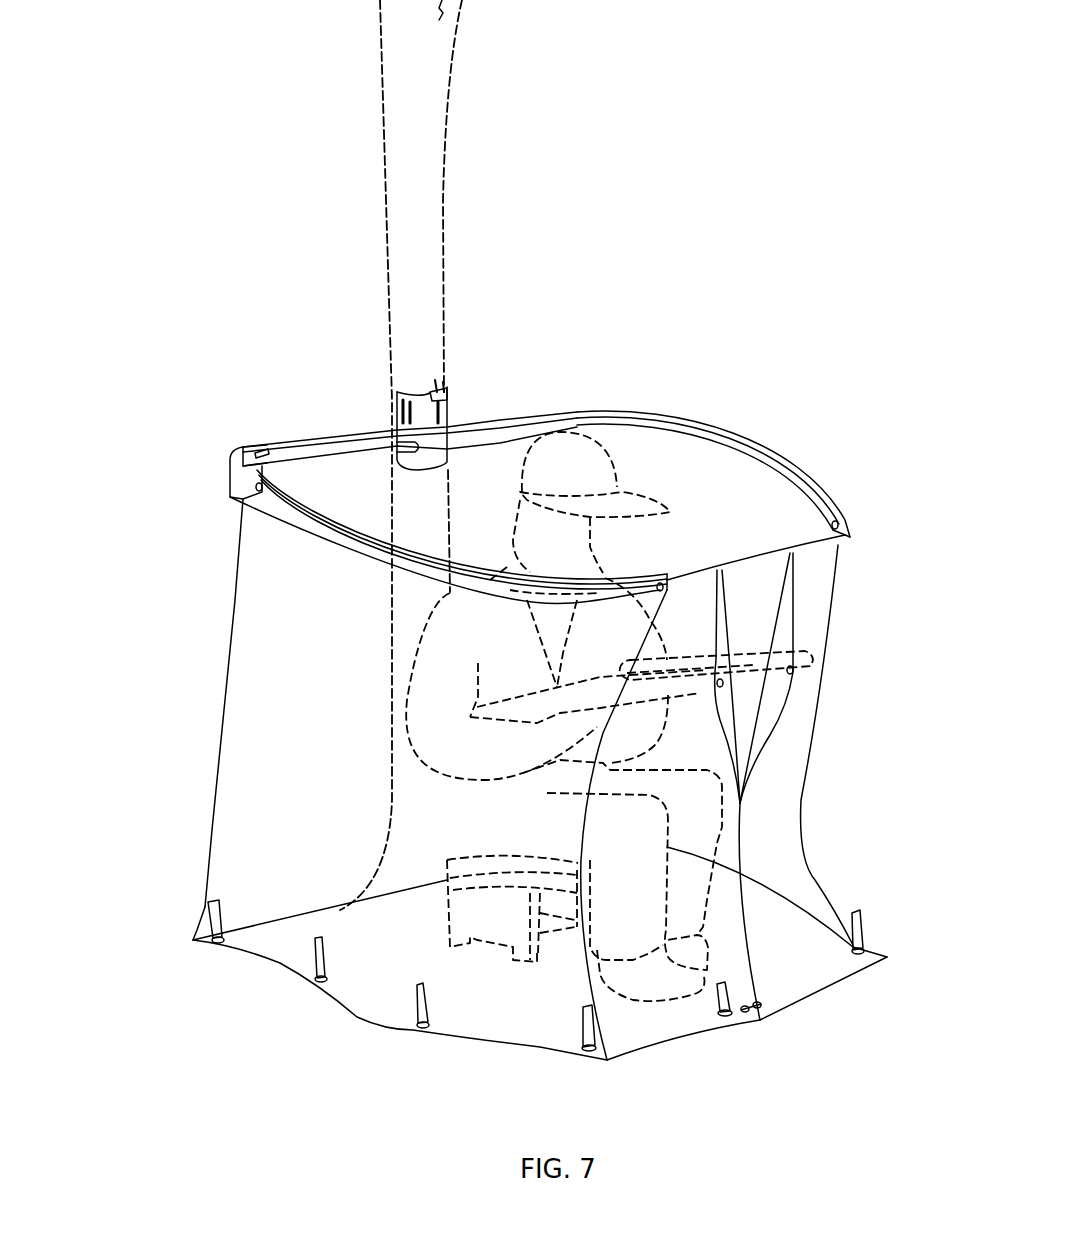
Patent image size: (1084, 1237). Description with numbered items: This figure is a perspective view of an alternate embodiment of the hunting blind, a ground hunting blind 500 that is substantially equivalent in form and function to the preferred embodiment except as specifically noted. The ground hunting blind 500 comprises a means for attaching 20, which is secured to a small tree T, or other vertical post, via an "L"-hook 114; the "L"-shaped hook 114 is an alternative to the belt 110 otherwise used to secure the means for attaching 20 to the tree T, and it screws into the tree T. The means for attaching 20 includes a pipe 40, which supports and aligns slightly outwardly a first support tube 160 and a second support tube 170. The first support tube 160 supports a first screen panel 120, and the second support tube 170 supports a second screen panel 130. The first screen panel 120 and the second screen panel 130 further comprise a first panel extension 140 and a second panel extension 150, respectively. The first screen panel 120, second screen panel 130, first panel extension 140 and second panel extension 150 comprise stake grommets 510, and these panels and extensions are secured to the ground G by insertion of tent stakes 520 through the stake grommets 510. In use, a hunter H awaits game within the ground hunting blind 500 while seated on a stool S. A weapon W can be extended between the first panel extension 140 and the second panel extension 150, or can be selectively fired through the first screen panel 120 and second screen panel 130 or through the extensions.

The ground hunting blind 500 is at (820, 216).
The belt 110 is at (392, 422).
The "L"-shaped hook 114 is at (440, 390).
The means for attaching 20 is at (477, 435).
The pipe 40 is at (520, 437).
The first support tube 160 is at (340, 528).
The second support tube 170 is at (815, 490).
The second screen panel 130 is at (720, 490).
The first screen panel 120 is at (257, 778).
The first panel extension 140 is at (647, 1003).
The second panel extension 150 is at (792, 960).
The tent stakes 520 is at (207, 907).
The stake grommets 510 is at (220, 947).
The tree T is at (422, 200).
The hunter H is at (587, 453).
The weapon W is at (750, 660).
The stool S is at (512, 909).
The ground G is at (540, 1006).